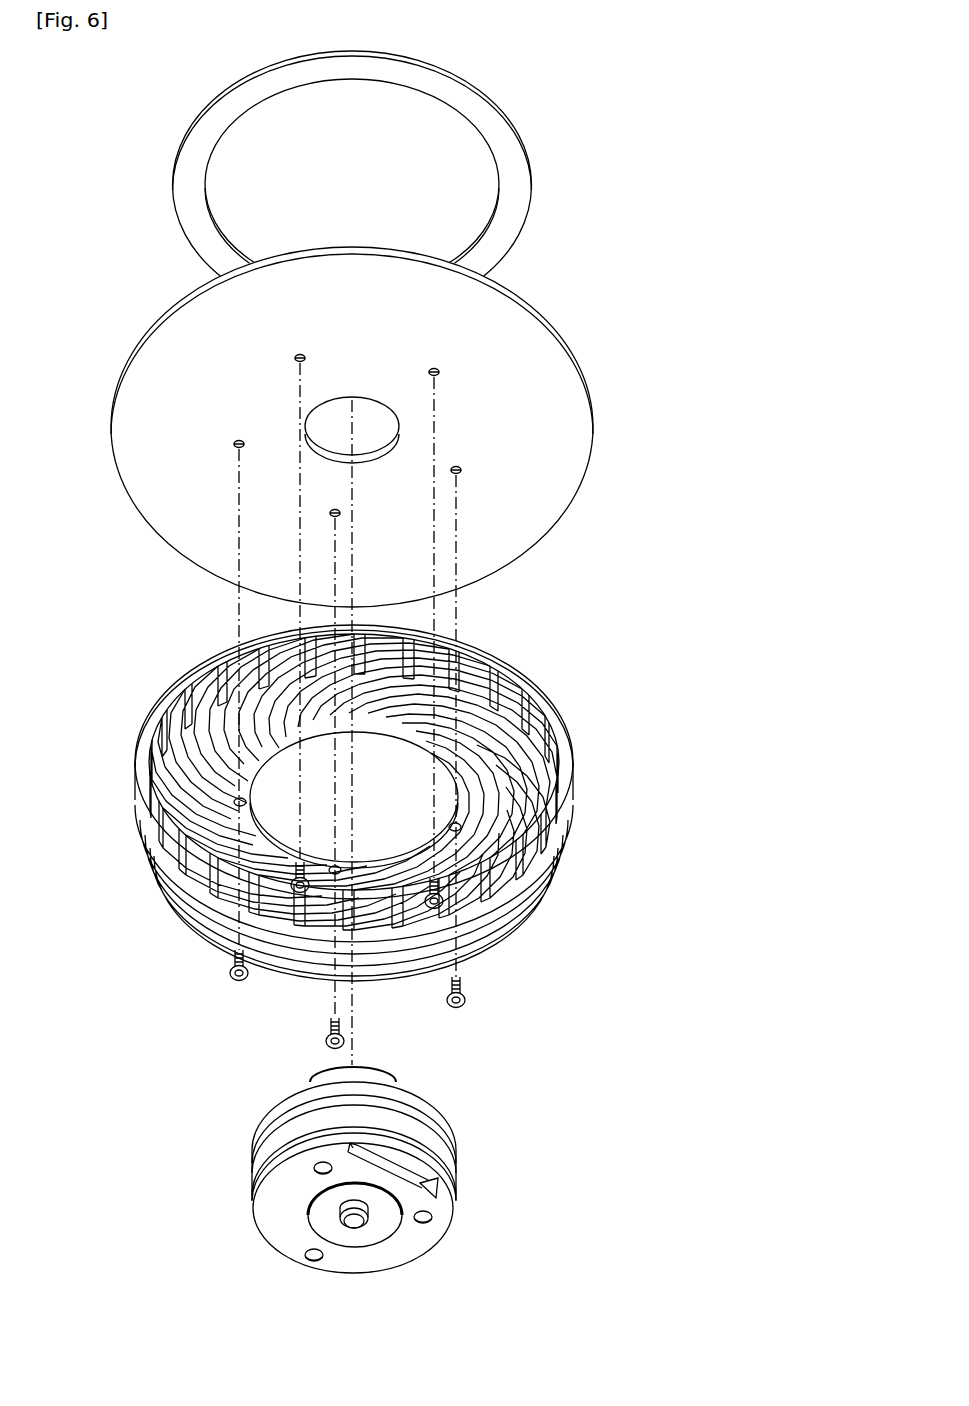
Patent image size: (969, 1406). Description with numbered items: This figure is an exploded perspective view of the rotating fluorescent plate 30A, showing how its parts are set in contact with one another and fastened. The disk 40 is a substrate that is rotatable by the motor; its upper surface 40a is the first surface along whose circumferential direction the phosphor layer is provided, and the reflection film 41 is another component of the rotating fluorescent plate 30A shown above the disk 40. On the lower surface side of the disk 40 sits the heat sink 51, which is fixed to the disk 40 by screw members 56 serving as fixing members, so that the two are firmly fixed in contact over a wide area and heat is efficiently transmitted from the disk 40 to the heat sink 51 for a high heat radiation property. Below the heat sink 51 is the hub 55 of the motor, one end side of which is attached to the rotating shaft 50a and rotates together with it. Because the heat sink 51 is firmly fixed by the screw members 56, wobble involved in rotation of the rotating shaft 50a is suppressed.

The rotating fluorescent plate 30A is at (612, 128).
The reflection film 41 is at (507, 227).
The disk 40 is at (570, 402).
The upper surface 40a is at (203, 528).
The heat sink 51 is at (550, 887).
The screw members 56 is at (466, 977).
The hub 55 is at (335, 1176).
The rotating shaft 50a is at (355, 1227).